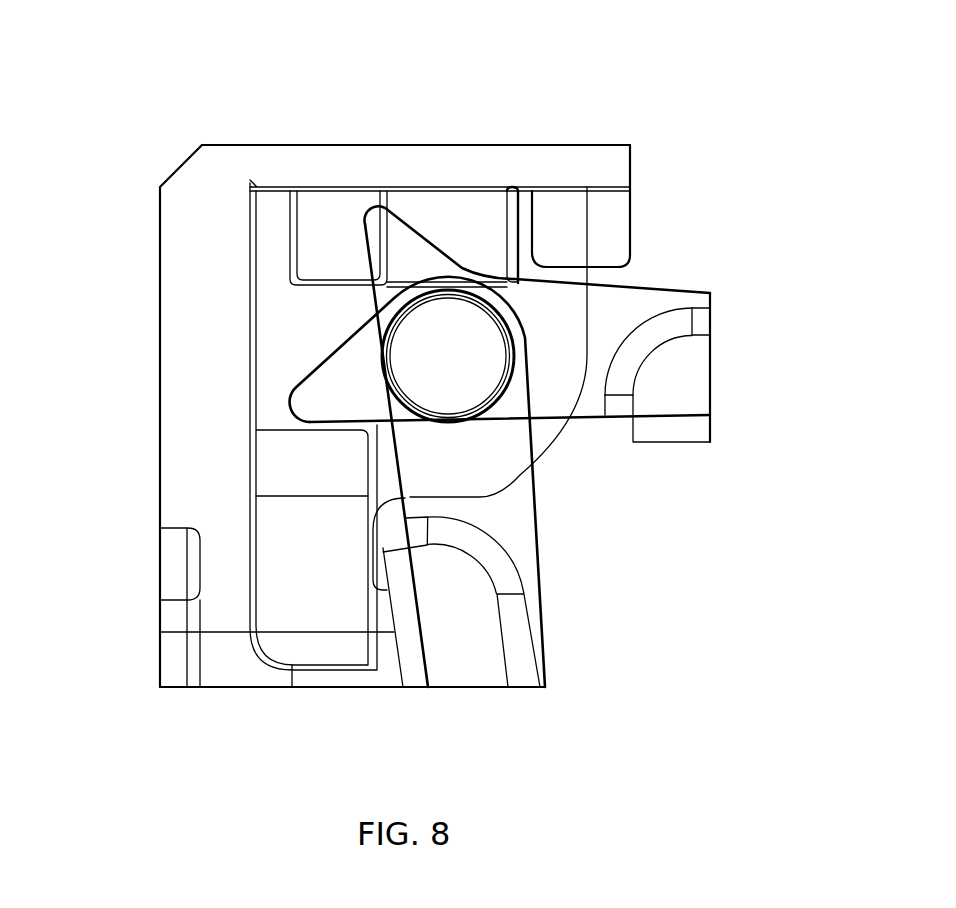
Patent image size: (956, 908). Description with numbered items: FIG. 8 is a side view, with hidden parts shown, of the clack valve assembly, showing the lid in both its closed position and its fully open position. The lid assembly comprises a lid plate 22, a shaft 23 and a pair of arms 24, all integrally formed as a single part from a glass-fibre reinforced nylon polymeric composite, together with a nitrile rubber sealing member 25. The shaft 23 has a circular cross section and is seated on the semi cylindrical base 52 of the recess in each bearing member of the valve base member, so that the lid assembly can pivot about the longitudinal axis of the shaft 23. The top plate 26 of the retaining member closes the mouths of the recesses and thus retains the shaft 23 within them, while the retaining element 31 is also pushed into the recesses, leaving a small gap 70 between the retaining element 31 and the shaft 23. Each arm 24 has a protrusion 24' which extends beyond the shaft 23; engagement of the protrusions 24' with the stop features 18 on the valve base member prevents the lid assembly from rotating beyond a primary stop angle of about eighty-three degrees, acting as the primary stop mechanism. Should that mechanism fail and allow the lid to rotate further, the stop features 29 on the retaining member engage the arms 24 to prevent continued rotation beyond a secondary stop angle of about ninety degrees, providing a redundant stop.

The stop feature 18 is at (293, 465).
The lid plate 22 is at (690, 378).
The shaft 23 is at (482, 272).
The arm 24 is at (546, 401).
The protrusion 24' is at (403, 391).
The sealing member 25 is at (695, 428).
The top plate 26 is at (572, 145).
The stop feature 29 is at (612, 218).
The retaining element 31 is at (483, 290).
The semi cylindrical base 52 is at (412, 410).
The gap 70 is at (380, 305).